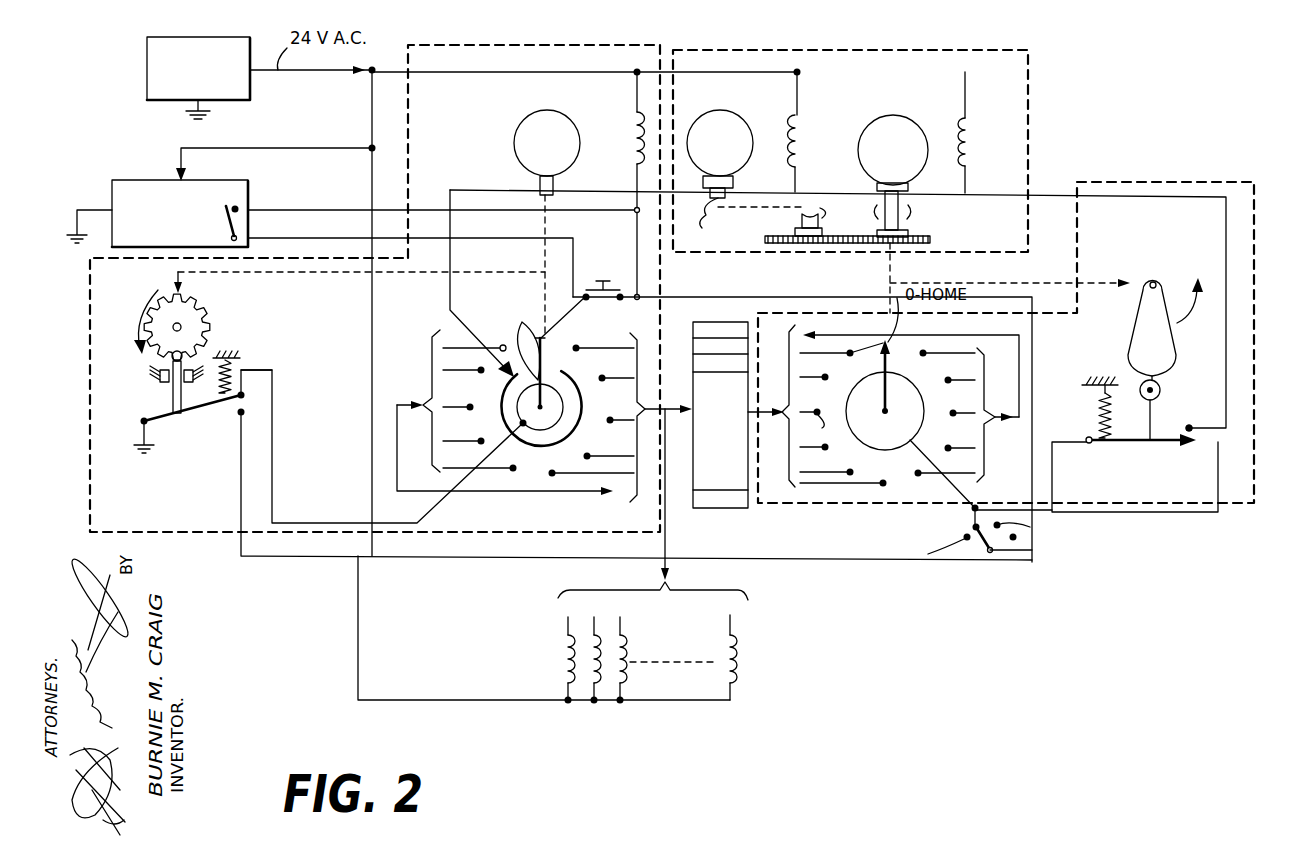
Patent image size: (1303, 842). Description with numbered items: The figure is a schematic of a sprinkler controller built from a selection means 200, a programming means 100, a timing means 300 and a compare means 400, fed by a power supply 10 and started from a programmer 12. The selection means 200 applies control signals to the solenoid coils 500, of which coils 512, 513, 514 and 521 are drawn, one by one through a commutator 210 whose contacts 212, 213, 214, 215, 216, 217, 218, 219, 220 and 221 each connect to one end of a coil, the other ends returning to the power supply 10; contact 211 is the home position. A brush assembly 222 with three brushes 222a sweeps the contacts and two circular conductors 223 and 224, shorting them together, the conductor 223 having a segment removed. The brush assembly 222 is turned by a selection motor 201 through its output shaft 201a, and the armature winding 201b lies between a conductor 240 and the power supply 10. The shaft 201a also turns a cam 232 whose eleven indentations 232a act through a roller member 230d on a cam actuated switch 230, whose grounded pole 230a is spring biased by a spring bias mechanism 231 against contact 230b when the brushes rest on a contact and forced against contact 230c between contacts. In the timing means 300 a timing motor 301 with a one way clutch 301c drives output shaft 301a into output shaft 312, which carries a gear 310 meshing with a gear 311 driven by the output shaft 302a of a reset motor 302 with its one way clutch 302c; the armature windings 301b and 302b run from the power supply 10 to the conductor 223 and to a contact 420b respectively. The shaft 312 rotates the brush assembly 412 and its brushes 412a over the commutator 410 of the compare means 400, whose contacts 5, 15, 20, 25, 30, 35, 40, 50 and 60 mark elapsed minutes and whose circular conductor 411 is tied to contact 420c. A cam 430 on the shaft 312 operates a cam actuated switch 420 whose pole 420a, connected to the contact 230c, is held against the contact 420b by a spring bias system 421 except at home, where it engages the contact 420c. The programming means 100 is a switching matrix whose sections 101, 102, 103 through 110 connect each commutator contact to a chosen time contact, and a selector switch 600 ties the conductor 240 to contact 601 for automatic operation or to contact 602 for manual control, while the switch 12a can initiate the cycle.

The power supply 10 is at (147, 44).
The programmer 12 is at (170, 199).
The switch 12a is at (220, 222).
The programming means 100 is at (755, 440).
The section 101 is at (720, 332).
The switching circuit 102 is at (720, 348).
The switching circuit 103 is at (720, 365).
The switching circuit 110 is at (720, 500).
The selection means 200 is at (192, 533).
The selection motor 201 is at (535, 141).
The output shaft 201a is at (540, 186).
The armature winding 201b is at (633, 120).
The commutator 210 is at (430, 312).
The home contact 211 is at (543, 330).
The contact 212 is at (579, 345).
The contact 213 is at (602, 376).
The contact 214 is at (608, 418).
The contact 215 is at (588, 453).
The contact 216 is at (556, 472).
The contact 217 is at (513, 471).
The contact 218 is at (481, 444).
The contact 219 is at (471, 411).
The contact 220 is at (443, 372).
The contact 221 is at (443, 348).
The brush assembly 222 is at (557, 340).
The brushes 222a is at (528, 330).
The circular conductor 223 is at (502, 381).
The circular conductor 224 is at (523, 427).
The cam actuated switch 230 is at (225, 415).
The pole 230a is at (246, 396).
The contact 230b is at (250, 392).
The contact 230c is at (245, 415).
The roller member 230d is at (157, 357).
The spring bias mechanism 231 is at (240, 367).
The cam 232 is at (222, 323).
The indentations 232a is at (200, 300).
The conductor 240 is at (633, 232).
The timing means 300 is at (1028, 84).
The timing motor 301 is at (772, 159).
The output shaft 301a is at (703, 217).
The armature winding 301b is at (800, 131).
The one way clutch 301c is at (733, 184).
The reset motor 302 is at (952, 154).
The output shaft 302a is at (908, 211).
The armature winding 302b is at (967, 122).
The one way clutch 302c is at (877, 187).
The gear 310 is at (783, 234).
The gear 311 is at (932, 240).
The output shaft 312 is at (820, 224).
The compare means 400 is at (1077, 183).
The commutator 410 is at (796, 487).
The circular conductor 411 is at (905, 442).
The brush assembly 412 is at (900, 413).
The brushes 412a is at (883, 380).
The cam actuated switch 420 is at (1150, 457).
The pole 420a is at (1196, 445).
The contact 420b is at (1209, 407).
The contact 420c is at (1188, 448).
The spring bias system 421 is at (1096, 410).
The cam 430 is at (1120, 331).
The solenoid coils 500 is at (663, 643).
The solenoid coil 512 is at (562, 635).
The solenoid coil 513 is at (585, 663).
The solenoid coil 514 is at (615, 680).
The solenoid coil 521 is at (728, 637).
The selector switch 600 is at (970, 550).
The contact 601 is at (973, 525).
The contact 602 is at (1030, 527).
The contact 5 is at (825, 380).
The contact 15 is at (825, 450).
The contact 20 is at (850, 475).
The contact 25 is at (883, 486).
The contact 30 is at (918, 476).
The contact 35 is at (948, 447).
The contact 40 is at (952, 400).
The contact 50 is at (949, 379).
The contact 60 is at (924, 351).